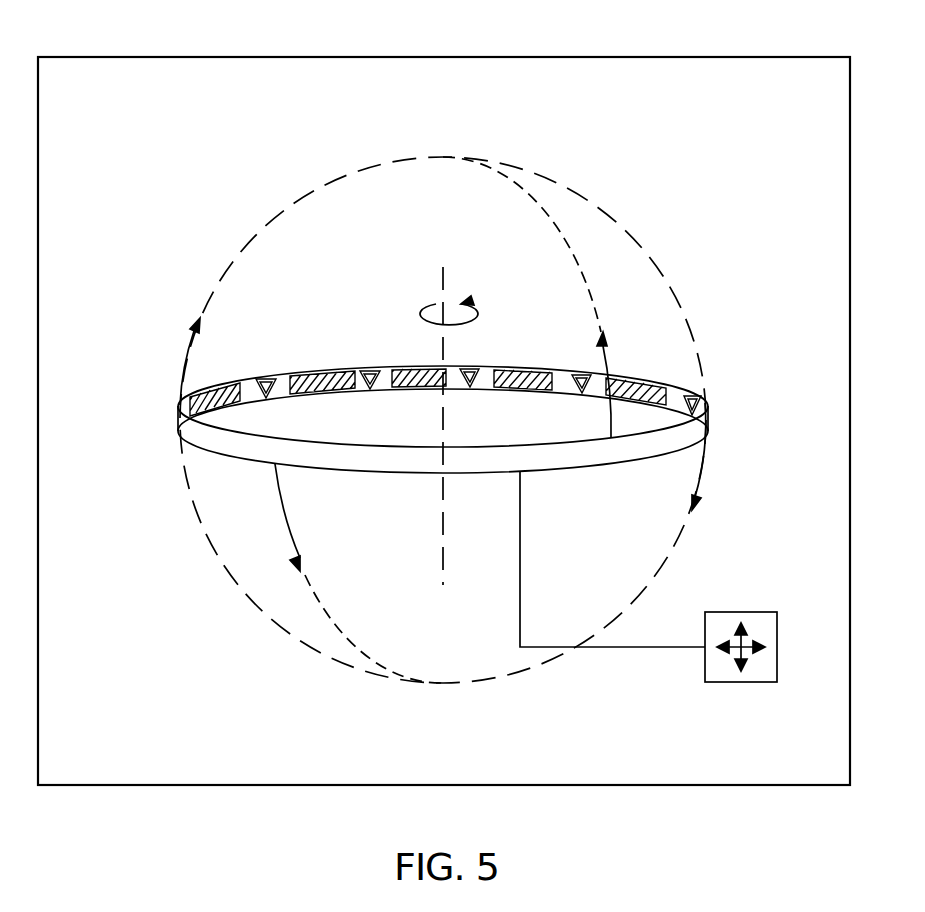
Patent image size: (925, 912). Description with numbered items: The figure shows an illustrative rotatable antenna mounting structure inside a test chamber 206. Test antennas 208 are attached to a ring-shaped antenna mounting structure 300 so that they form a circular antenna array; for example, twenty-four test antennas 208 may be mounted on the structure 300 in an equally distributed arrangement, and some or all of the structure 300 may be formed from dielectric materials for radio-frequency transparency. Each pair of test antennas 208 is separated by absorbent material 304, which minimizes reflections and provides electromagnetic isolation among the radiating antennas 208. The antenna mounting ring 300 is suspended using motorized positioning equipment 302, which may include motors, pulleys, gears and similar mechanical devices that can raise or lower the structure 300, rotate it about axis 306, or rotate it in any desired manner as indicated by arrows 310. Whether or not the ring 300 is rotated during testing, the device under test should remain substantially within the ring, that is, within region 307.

The test chamber 206 is at (734, 57).
The region 307 is at (592, 203).
The arrows 310 is at (183, 365).
The ring-shaped antenna mounting structure 300 is at (203, 436).
The axis 306 is at (445, 408).
The absorbent material 304 is at (308, 374).
The test antennas 208 is at (582, 373).
The motorized positioning equipment 302 is at (747, 683).